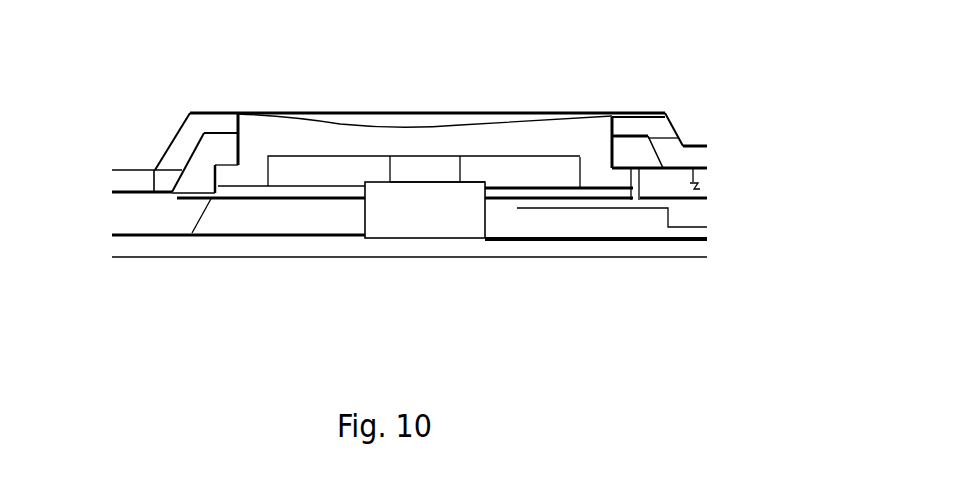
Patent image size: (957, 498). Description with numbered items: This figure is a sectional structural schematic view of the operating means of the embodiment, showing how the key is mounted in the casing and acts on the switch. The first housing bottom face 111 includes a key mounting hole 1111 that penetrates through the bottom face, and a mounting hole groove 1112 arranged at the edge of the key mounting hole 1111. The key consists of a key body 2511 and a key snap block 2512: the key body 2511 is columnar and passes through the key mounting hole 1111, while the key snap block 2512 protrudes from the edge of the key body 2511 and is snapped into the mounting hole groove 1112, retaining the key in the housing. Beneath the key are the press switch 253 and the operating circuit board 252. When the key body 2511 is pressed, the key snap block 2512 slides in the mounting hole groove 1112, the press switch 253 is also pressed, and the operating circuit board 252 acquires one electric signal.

The first housing bottom face 111 is at (203, 122).
The key mounting hole 1111 is at (538, 175).
The mounting hole groove 1112 is at (215, 192).
The key body 2511 is at (433, 140).
The key snap block 2512 is at (615, 180).
The press switch 253 is at (422, 217).
The operating circuit board 252 is at (660, 203).